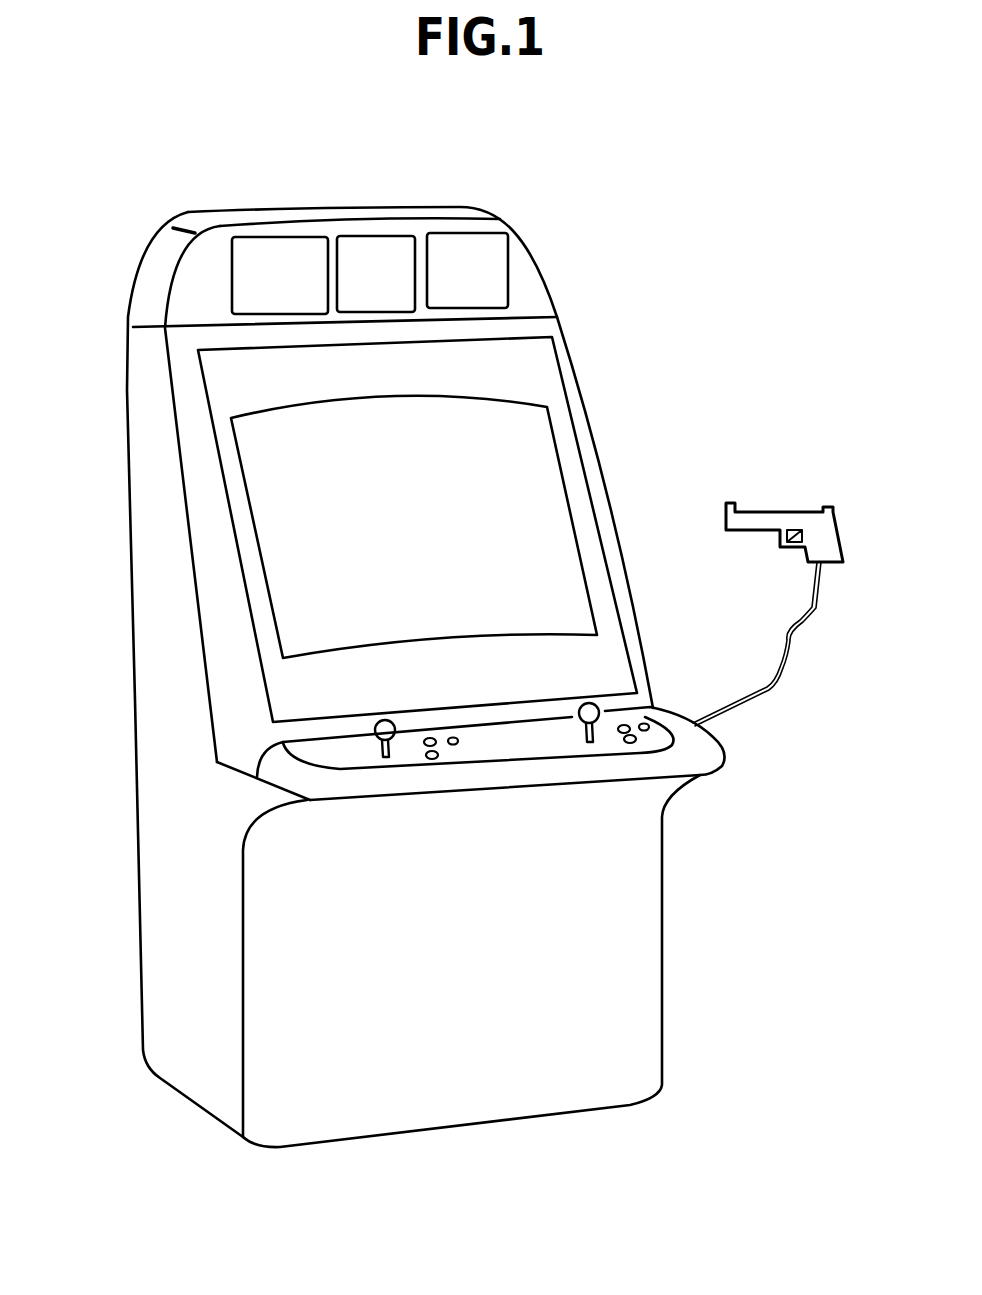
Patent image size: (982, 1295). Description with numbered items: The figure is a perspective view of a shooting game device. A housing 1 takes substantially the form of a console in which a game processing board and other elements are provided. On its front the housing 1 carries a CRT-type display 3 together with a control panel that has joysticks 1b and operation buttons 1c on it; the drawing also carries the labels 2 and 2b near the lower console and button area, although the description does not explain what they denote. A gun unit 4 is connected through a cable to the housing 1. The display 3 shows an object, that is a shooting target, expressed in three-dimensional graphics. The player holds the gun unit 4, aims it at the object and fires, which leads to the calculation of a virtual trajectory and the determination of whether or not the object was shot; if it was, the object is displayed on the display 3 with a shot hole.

The housing 1 is at (120, 765).
The joysticks 1b is at (383, 755).
The operation buttons 1c is at (647, 717).
The control panel unit 2 is at (712, 783).
The push buttons 2b is at (452, 746).
The CRT-type display 3 is at (622, 490).
The gun unit 4 is at (838, 538).